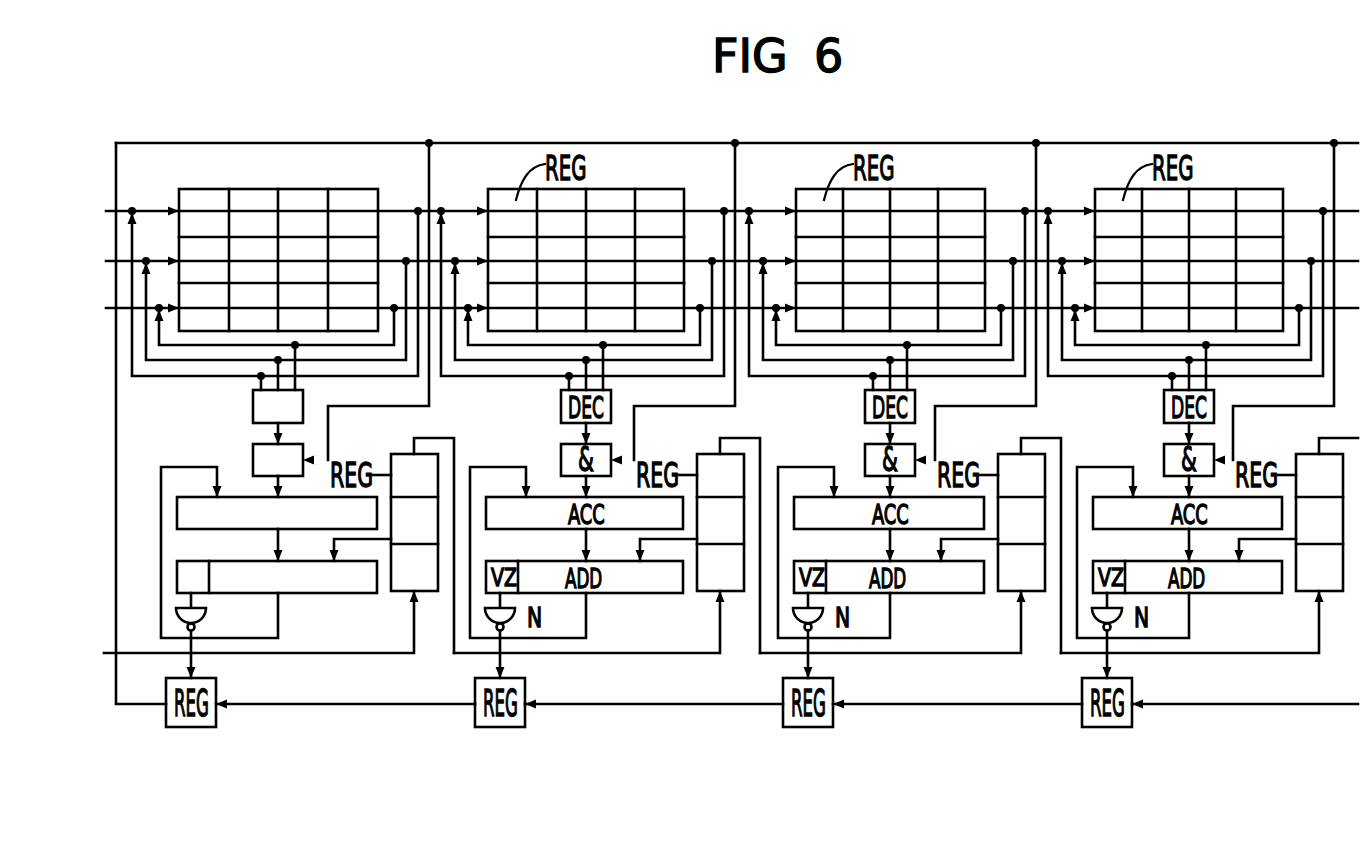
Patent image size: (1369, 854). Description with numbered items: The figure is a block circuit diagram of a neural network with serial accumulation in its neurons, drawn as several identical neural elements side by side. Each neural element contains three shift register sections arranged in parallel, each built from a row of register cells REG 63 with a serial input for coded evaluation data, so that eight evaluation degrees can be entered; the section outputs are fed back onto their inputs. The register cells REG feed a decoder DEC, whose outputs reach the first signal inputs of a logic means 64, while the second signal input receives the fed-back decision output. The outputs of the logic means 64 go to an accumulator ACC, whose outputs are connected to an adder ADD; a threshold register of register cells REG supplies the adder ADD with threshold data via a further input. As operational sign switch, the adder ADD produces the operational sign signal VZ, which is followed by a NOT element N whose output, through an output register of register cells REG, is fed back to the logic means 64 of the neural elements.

The register cells REG 63 is at (260, 239).
The logic means 64 is at (247, 447).
The register cells REG is at (242, 174).
The decoder DEC is at (278, 408).
The accumulator ACC is at (277, 513).
The adder ADD is at (277, 577).
The operational sign signal VZ is at (195, 576).
The NOT element N is at (204, 635).